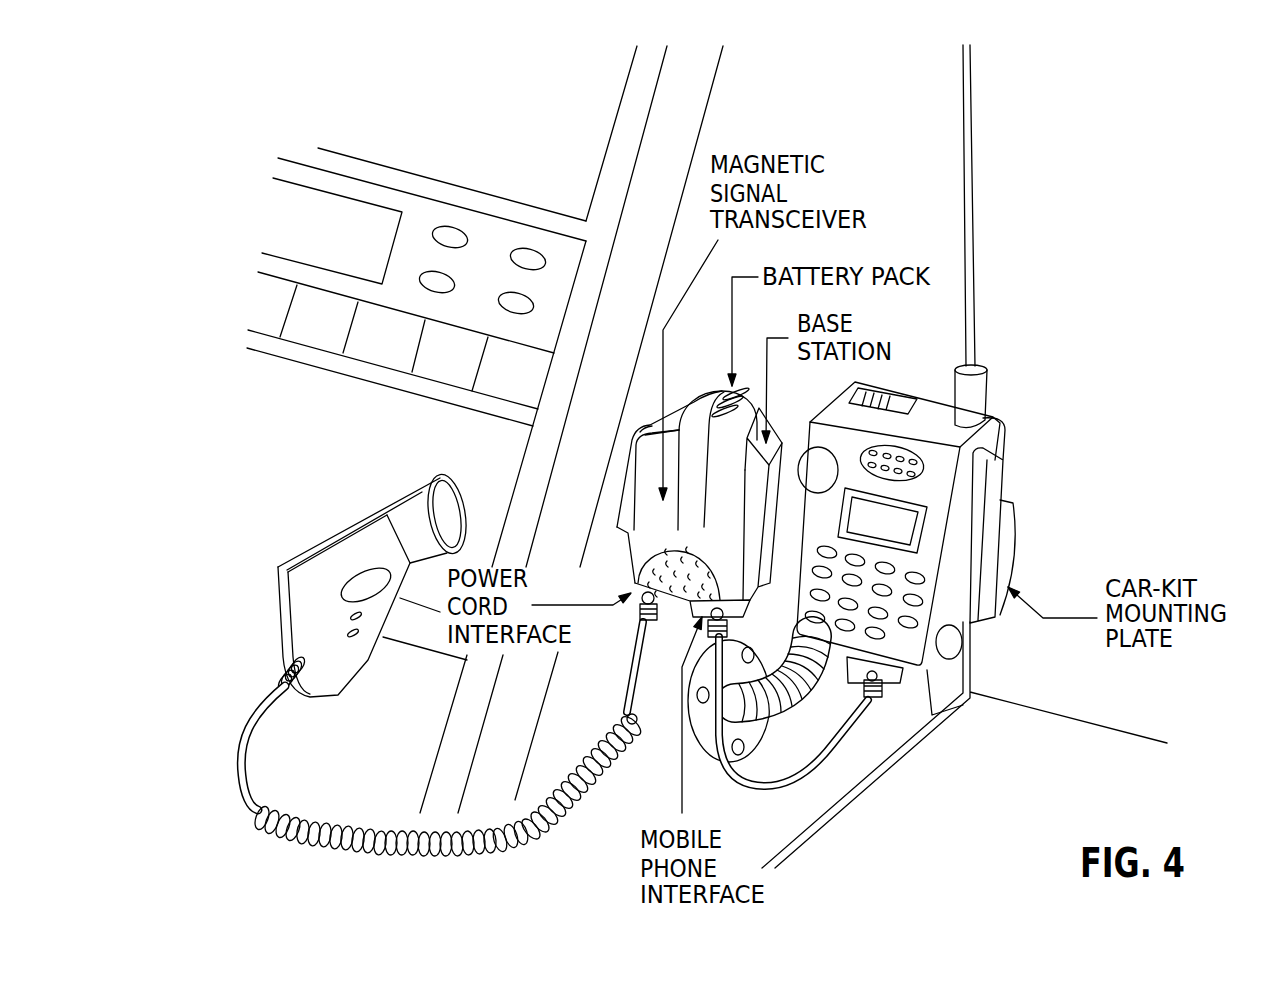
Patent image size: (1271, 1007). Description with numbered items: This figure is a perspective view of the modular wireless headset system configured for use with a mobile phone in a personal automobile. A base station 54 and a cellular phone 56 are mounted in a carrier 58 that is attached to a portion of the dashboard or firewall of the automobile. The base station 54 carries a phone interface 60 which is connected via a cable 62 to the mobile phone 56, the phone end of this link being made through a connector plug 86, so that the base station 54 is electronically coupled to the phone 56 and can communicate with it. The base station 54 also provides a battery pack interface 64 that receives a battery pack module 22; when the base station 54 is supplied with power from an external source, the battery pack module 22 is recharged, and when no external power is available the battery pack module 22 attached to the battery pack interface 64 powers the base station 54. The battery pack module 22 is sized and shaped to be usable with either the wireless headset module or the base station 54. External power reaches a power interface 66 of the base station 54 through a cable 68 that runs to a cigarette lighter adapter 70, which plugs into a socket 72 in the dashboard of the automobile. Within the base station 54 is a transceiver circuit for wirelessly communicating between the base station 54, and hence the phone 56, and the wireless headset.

The battery pack module 22 is at (708, 457).
The base station 54 is at (689, 412).
The cellular phone 56 is at (998, 438).
The carrier 58 is at (1005, 547).
The phone interface 60 is at (700, 611).
The cable 62 is at (772, 793).
The battery pack interface 64 is at (707, 537).
The power interface 66 is at (636, 590).
The cable 68 is at (375, 840).
The cigarette lighter adapter 70 is at (413, 505).
The socket 72 is at (447, 493).
The connector plug 86 is at (880, 698).